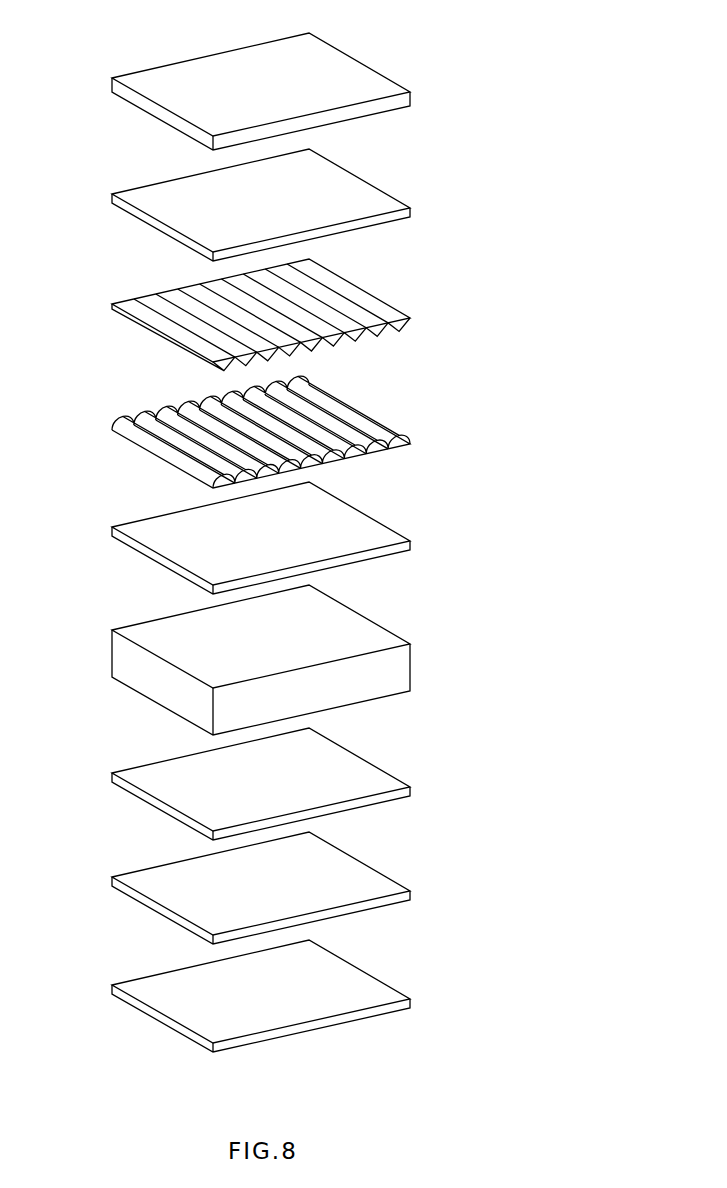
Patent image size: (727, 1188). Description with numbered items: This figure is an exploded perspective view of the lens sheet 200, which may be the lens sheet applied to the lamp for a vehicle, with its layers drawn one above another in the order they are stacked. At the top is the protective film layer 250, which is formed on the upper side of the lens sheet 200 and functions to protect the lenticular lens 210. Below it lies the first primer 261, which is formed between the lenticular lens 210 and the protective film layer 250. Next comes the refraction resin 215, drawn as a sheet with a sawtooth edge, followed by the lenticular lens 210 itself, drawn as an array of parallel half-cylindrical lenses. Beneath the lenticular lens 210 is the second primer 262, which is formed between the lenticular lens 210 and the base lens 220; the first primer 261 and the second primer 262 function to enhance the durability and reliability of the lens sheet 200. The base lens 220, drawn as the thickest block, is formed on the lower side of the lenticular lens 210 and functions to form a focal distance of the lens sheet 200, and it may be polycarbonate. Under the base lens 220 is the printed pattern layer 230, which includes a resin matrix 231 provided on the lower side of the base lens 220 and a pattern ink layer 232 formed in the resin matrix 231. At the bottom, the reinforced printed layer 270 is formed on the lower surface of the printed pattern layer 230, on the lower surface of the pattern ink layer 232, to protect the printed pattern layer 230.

The lens sheet 200 is at (90, 33).
The protective film layer 250 is at (410, 93).
The first primer 261 is at (410, 209).
The refraction resin 215 is at (410, 319).
The lenticular lens 210 is at (403, 434).
The second primer 262 is at (410, 542).
The base lens 220 is at (410, 672).
The printed pattern layer 230 is at (342, 836).
The resin matrix 231 is at (410, 789).
The pattern ink layer 232 is at (410, 892).
The reinforced printed layer 270 is at (410, 1000).